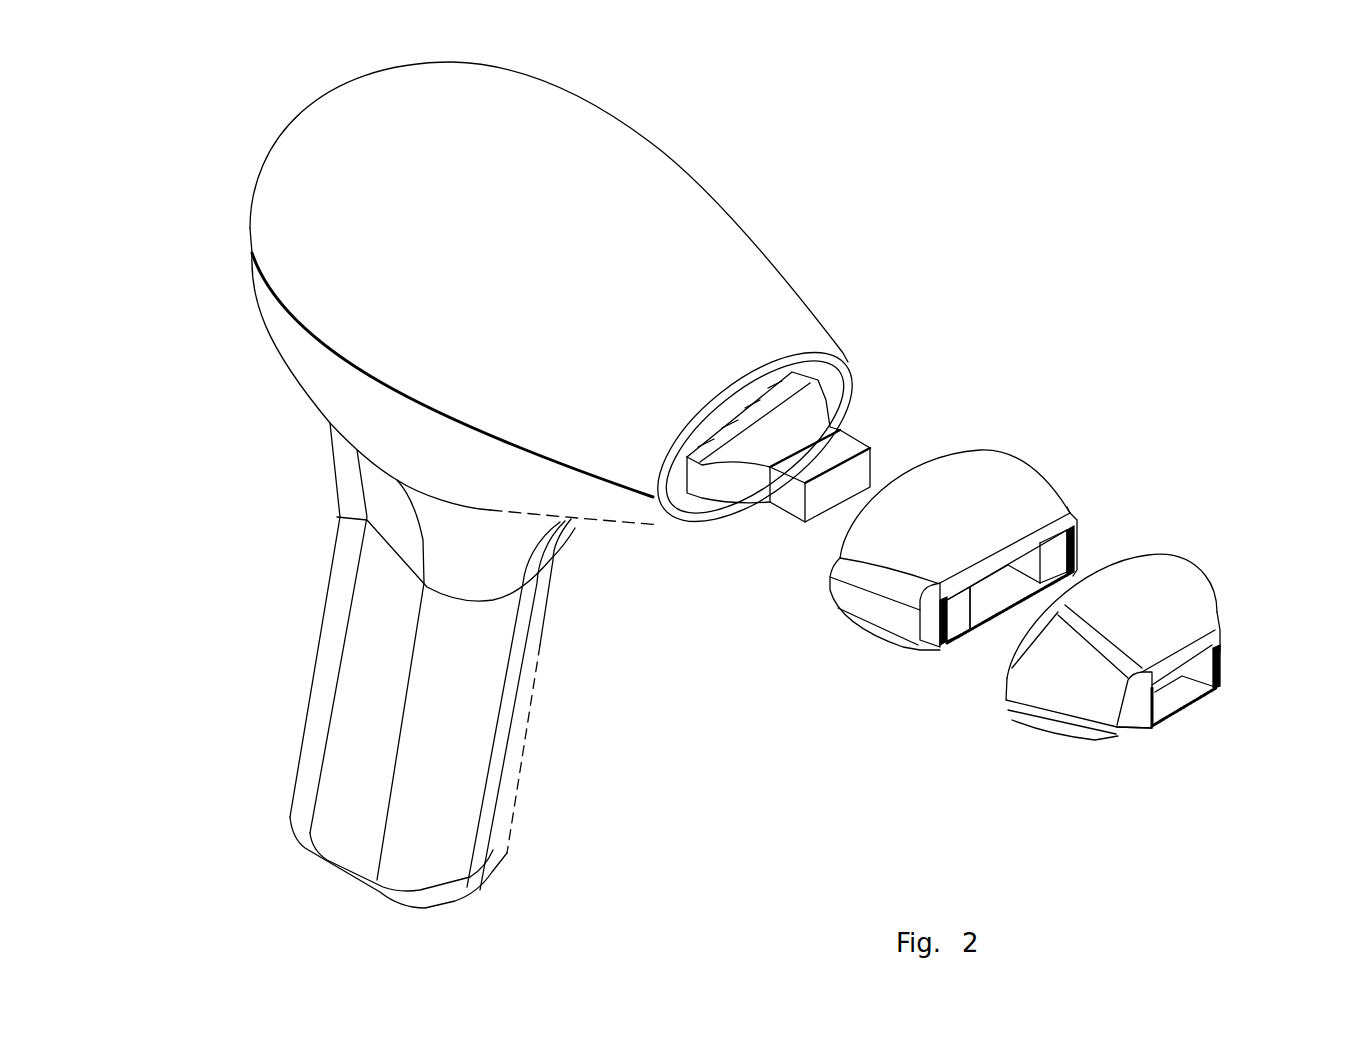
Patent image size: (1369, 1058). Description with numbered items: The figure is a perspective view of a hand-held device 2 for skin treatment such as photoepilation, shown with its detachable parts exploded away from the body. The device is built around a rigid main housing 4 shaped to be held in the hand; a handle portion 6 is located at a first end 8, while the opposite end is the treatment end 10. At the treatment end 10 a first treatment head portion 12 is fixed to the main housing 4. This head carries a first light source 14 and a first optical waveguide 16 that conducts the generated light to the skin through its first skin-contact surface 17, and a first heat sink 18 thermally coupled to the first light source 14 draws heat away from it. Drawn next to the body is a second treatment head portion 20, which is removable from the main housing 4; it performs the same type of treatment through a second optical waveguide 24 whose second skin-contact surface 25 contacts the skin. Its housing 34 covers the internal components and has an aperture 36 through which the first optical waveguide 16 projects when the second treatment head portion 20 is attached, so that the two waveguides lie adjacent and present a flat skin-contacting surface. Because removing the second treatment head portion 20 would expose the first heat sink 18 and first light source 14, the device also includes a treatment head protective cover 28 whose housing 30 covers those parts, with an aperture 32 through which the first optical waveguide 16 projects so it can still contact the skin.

The hand-held device 2 is at (219, 121).
The main housing 4 is at (657, 200).
The handle portion 6 is at (360, 693).
The first end 8 is at (338, 867).
The treatment end 10 is at (757, 327).
The first treatment head portion 12 is at (864, 426).
The first light source 14 is at (770, 498).
The first optical waveguide 16 is at (805, 466).
The first skin-contact surface 17 is at (832, 487).
The first heat sink 18 is at (712, 490).
The second treatment head portion 20 is at (1032, 568).
The second optical waveguide 24 is at (1057, 552).
The second skin-contact surface 25 is at (1057, 558).
The treatment head protective cover 28 is at (1118, 667).
The housing 30 is at (1022, 680).
The aperture 32 is at (1170, 708).
The housing 34 is at (990, 490).
The aperture 36 is at (992, 608).